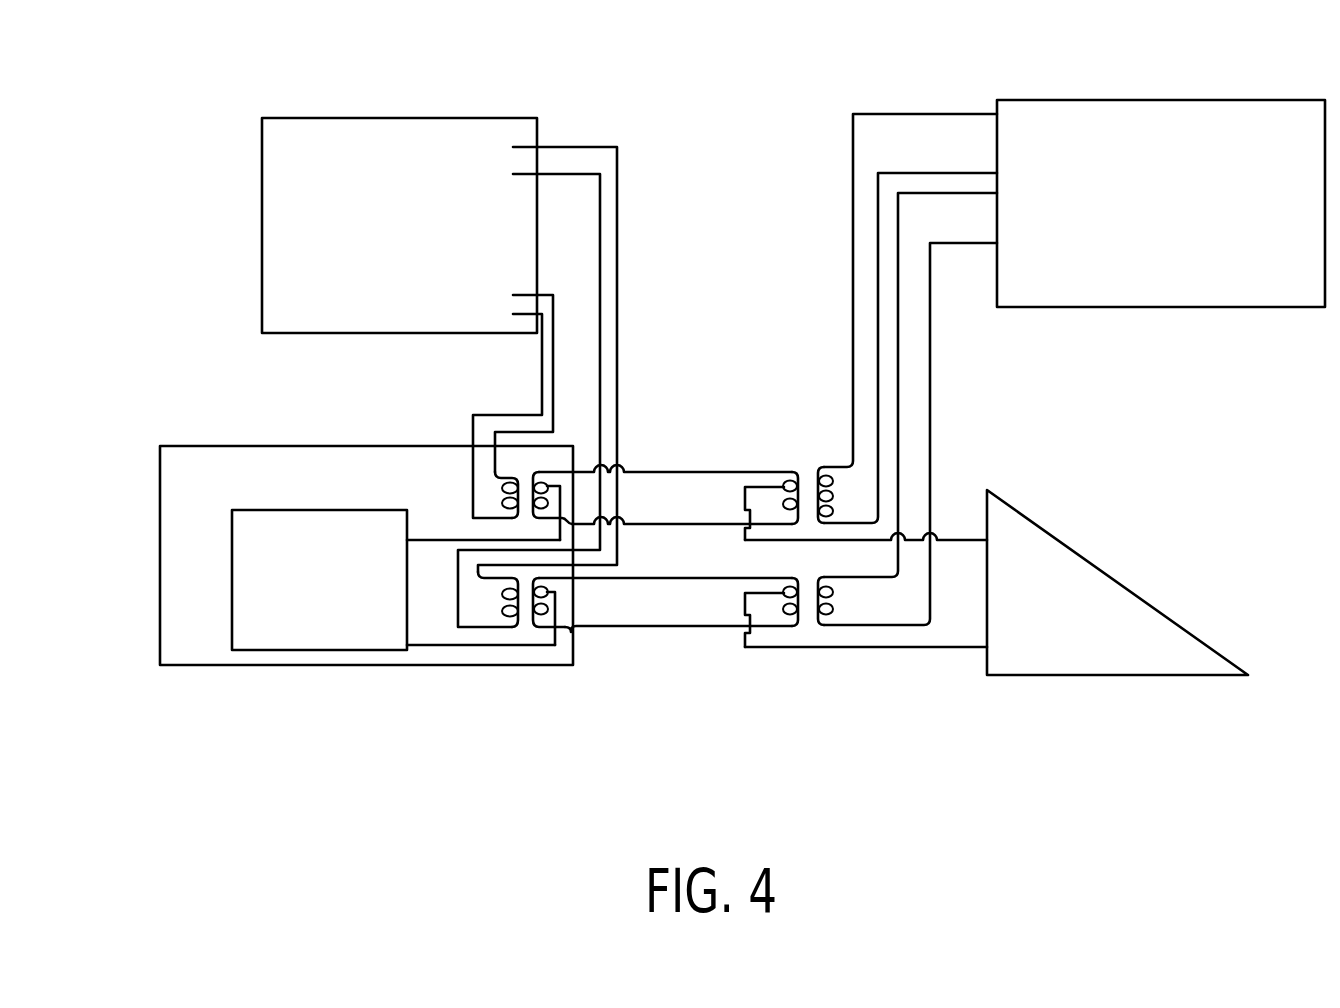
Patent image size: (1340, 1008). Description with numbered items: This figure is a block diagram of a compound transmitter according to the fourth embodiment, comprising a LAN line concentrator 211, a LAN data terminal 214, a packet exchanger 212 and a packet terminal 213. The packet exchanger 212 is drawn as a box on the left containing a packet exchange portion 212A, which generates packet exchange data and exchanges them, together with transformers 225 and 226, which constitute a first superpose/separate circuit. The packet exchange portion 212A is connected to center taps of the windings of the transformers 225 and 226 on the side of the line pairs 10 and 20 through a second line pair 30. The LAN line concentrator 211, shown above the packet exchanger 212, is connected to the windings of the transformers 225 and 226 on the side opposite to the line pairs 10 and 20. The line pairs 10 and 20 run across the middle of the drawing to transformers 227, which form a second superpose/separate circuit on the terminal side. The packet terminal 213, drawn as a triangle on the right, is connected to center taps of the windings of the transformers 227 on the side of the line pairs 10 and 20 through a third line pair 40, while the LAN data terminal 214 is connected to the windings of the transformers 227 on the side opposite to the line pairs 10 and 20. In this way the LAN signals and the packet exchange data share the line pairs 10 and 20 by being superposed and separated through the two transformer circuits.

The LAN line concentrator 211 is at (322, 133).
The LAN data terminal 214 is at (1103, 133).
The packet exchanger 212 is at (298, 457).
The packet exchange portion 212A is at (327, 652).
The packet terminal 213 is at (1078, 567).
The transformer 225 is at (525, 478).
The transformer 226 is at (530, 620).
The transformer 227 is at (805, 480).
The line pair 10 is at (695, 520).
The line pair 20 is at (684, 578).
The second line pair 30 is at (447, 540).
The third line pair 40 is at (960, 540).